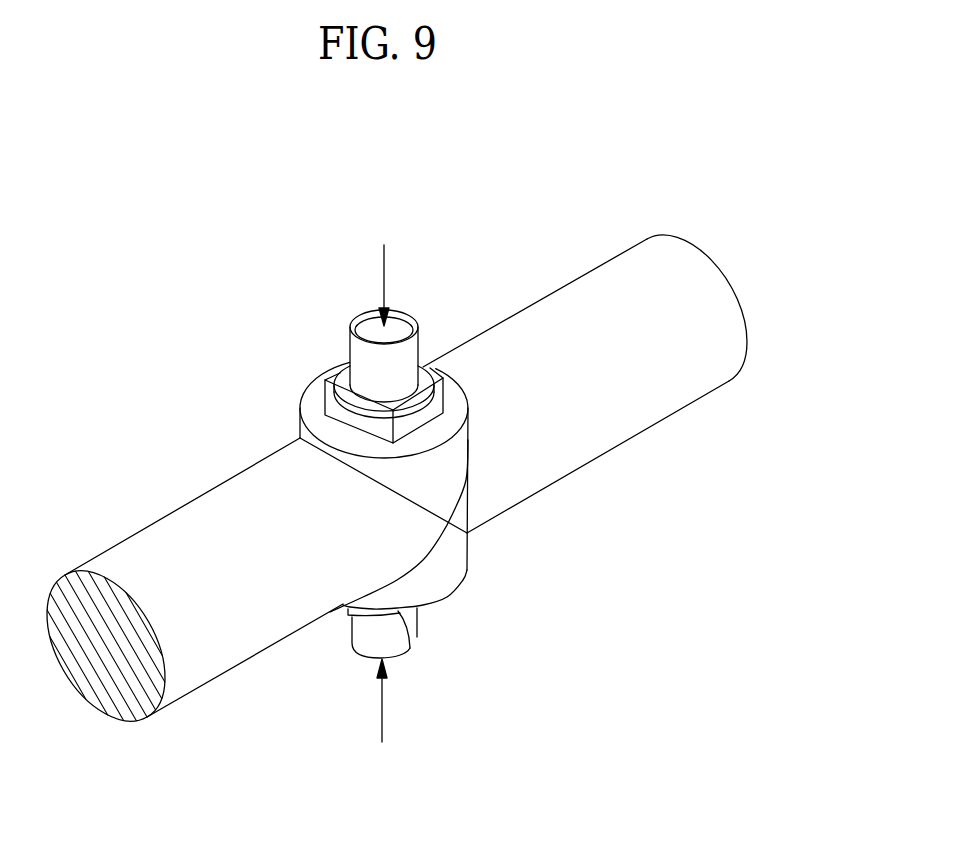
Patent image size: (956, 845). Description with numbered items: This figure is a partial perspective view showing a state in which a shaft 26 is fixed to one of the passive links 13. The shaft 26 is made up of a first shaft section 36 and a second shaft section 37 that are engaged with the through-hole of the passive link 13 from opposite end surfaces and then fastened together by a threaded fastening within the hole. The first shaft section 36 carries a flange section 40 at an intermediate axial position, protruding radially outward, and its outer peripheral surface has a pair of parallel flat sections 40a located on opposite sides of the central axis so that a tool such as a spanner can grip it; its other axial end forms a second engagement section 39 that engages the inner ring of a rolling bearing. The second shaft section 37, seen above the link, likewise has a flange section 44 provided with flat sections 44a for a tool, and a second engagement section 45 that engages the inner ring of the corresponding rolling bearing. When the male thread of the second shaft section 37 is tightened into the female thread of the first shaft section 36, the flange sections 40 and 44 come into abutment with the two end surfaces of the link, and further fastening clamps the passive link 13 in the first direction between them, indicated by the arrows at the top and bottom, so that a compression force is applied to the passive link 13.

The passive link 13 is at (598, 297).
The shaft 26 is at (468, 628).
The first shaft section 36 is at (349, 688).
The second shaft section 37 is at (336, 297).
The second engagement section 39 is at (417, 637).
The flange section 40 is at (348, 616).
The flat sections 40a is at (410, 650).
The flange section 44 is at (333, 412).
The flat sections 44a is at (427, 413).
The second engagement section 45 is at (413, 352).